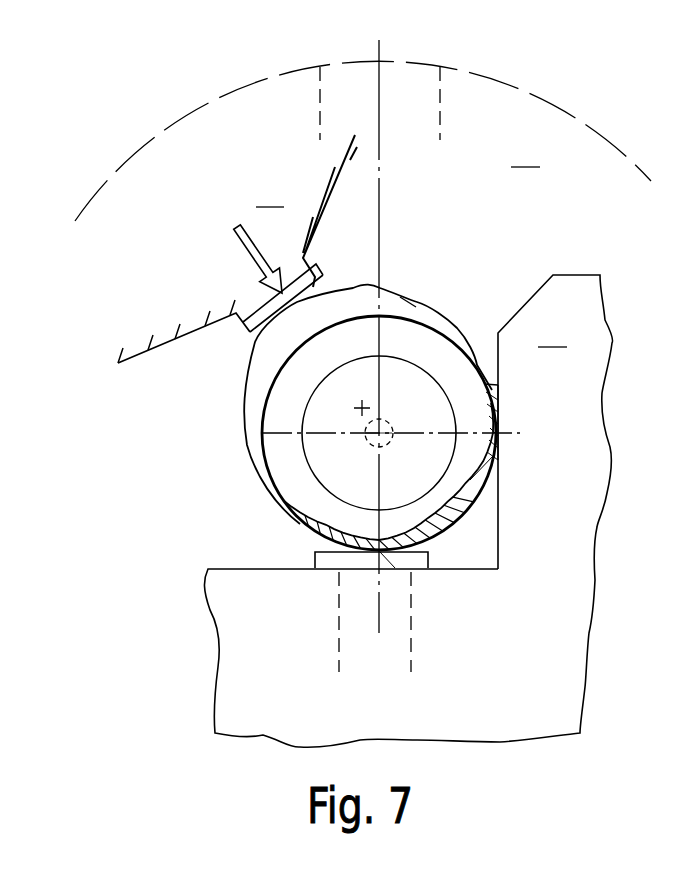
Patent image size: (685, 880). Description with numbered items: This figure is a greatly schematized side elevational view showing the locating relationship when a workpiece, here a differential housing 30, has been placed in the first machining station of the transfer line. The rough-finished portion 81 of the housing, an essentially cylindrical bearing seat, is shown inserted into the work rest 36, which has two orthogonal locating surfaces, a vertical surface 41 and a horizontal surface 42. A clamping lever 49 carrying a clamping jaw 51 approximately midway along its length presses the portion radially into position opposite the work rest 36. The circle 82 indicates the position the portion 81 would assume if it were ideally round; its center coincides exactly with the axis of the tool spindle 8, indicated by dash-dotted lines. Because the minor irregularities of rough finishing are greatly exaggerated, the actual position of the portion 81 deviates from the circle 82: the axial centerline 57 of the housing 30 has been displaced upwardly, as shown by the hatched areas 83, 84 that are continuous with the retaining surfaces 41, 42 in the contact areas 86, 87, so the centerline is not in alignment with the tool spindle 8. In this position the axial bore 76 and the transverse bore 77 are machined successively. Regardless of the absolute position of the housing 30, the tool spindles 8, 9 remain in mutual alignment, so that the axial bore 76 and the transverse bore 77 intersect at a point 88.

The tool spindle 8 is at (388, 424).
The tool spindle 9 is at (381, 222).
The differential housing 30 is at (527, 155).
The work rest 36 is at (555, 427).
The locating surface 41 is at (498, 505).
The locating surface 42 is at (432, 548).
The clamping lever 49 is at (203, 272).
The clamping jaw 51 is at (313, 277).
The axial centerline 57 is at (362, 408).
The axial bore 76 is at (437, 362).
The transverse bore 77 is at (440, 97).
The rough-finished portion 81 is at (424, 301).
The circle 82 is at (460, 325).
The hatched area 83 is at (498, 432).
The hatched area 84 is at (430, 546).
The contact area 86 is at (497, 407).
The contact area 87 is at (380, 553).
The intersection point 88 is at (379, 433).